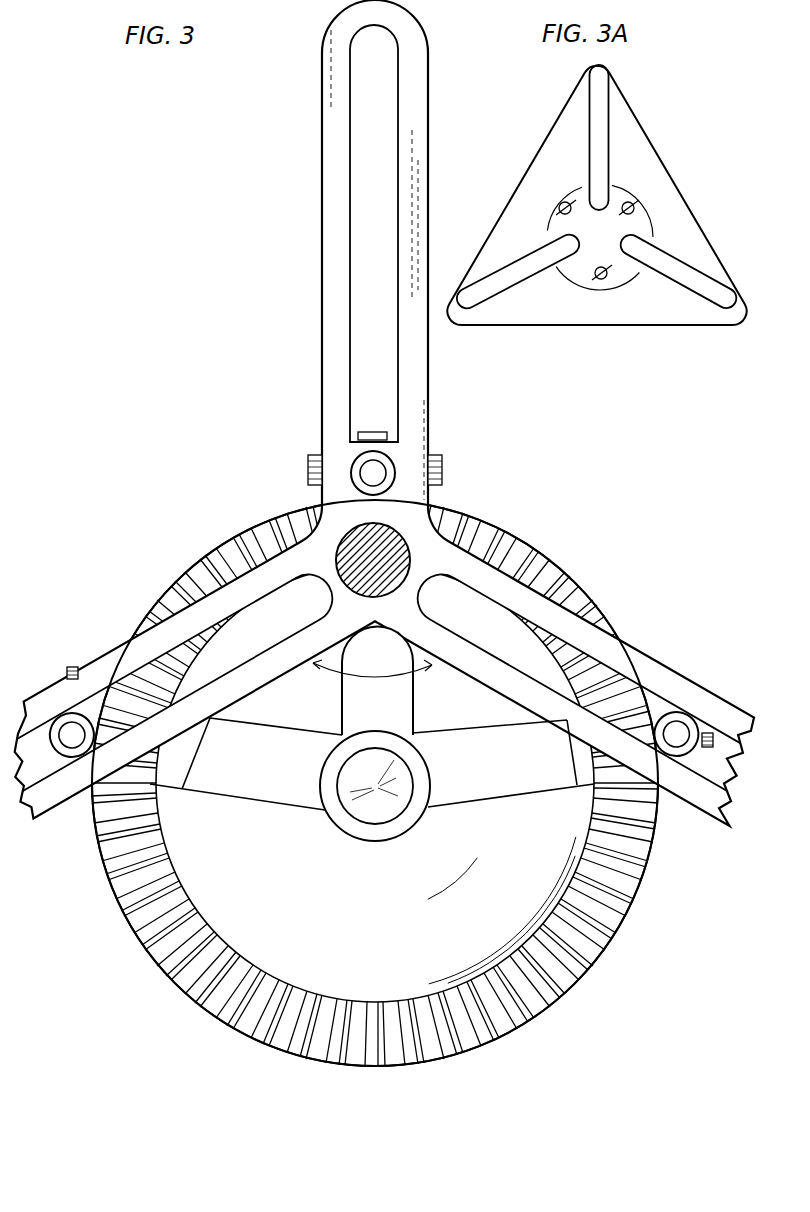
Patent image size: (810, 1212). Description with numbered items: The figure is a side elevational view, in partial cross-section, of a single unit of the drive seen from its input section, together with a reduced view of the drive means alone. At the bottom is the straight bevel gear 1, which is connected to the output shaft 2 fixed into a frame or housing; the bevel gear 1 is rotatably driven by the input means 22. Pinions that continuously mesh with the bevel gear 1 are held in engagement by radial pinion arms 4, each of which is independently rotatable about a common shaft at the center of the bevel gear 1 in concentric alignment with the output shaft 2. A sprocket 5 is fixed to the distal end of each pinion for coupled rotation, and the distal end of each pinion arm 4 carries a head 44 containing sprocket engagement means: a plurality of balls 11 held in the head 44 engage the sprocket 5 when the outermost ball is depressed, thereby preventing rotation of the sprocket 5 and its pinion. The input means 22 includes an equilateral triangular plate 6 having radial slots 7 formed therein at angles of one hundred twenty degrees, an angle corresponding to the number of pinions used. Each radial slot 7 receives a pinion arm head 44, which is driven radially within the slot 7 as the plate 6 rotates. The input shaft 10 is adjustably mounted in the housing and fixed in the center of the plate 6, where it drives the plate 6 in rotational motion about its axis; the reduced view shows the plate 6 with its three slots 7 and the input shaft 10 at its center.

In FIG. 3, the straight bevel gear 1 is at (125, 904).
In FIG. 3, the output shaft 2 is at (375, 786).
In FIG. 3, the radial pinion arm 4 is at (372, 718).
In FIG. 3, the sprocket 5 is at (443, 470).
In FIG. 3, the equilateral triangular plate 6 is at (327, 209).
In FIG. 3A, the equilateral triangular plate 6 is at (596, 195).
In FIG. 3, the radial slots 7 is at (478, 658).
In FIG. 3, the input shaft 10 is at (383, 524).
In FIG. 3, the balls 11 is at (716, 679).
In FIG. 3, the input means 22 is at (232, 504).
In FIG. 3, the head 44 is at (356, 463).